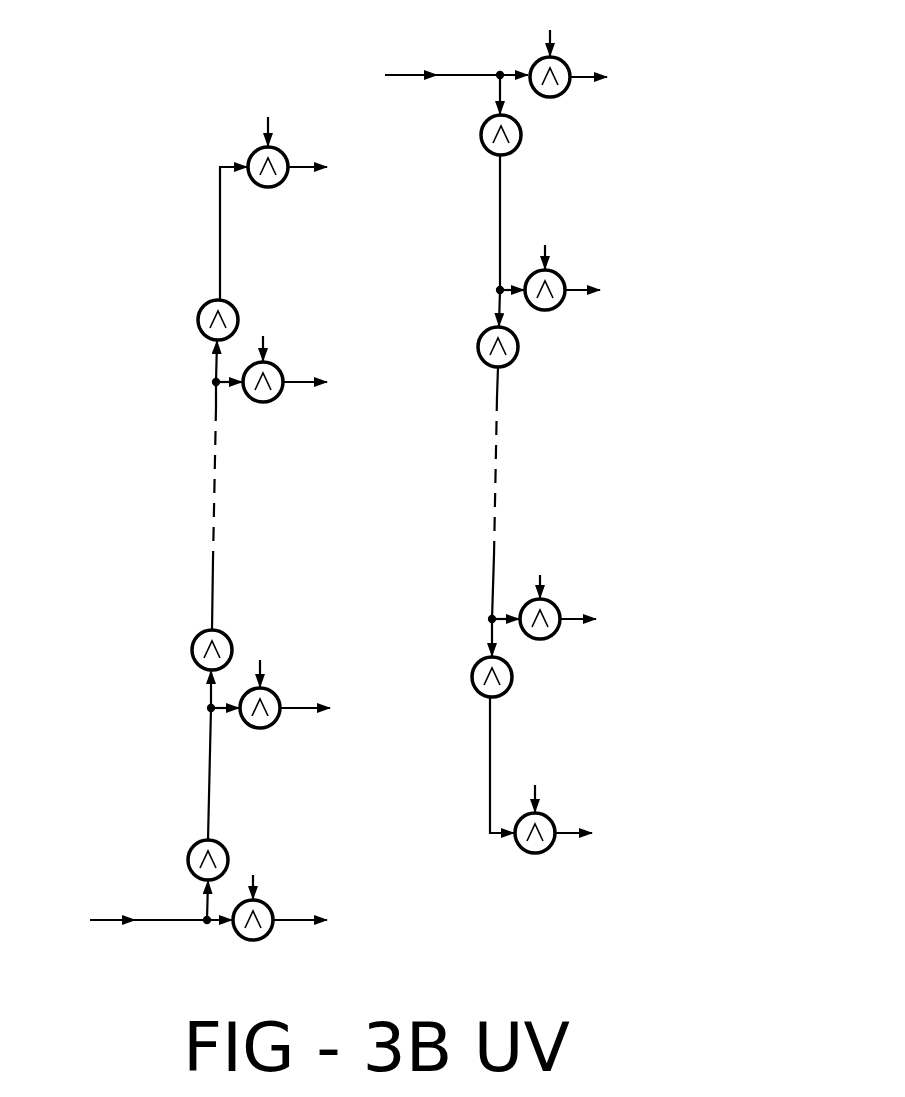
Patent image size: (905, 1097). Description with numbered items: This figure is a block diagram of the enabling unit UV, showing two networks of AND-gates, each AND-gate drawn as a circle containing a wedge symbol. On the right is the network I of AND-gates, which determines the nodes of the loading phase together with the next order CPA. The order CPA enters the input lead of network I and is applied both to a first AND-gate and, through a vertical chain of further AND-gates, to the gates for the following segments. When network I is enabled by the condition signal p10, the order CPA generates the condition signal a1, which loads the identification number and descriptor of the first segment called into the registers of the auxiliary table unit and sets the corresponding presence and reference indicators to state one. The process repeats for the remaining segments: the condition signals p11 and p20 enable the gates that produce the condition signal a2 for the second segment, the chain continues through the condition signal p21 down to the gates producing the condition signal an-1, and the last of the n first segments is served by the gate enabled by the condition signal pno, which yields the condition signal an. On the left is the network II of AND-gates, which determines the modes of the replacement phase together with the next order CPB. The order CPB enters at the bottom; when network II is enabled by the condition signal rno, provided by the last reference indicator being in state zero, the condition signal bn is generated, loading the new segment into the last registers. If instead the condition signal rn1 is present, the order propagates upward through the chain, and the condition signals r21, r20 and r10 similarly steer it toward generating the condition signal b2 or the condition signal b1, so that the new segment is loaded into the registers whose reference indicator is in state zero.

The order CPA is at (434, 59).
The order CPB is at (132, 928).
The condition signal p10 is at (552, 28).
The condition signal p11 is at (481, 134).
The condition signal p20 is at (537, 241).
The condition signal p21 is at (477, 347).
The condition signal pn0 pno is at (535, 782).
The condition signal a1 is at (587, 77).
The condition signal a2 is at (571, 290).
The condition signal a(n-1) an-1 is at (578, 619).
The condition signal an is at (559, 775).
The condition signal r10 is at (266, 114).
The condition signal r20 is at (275, 333).
The condition signal r21 is at (197, 320).
The condition signal rn1 is at (187, 860).
The condition signal rn0 rno is at (261, 871).
The condition signal b1 is at (295, 223).
The condition signal b2 is at (293, 382).
The condition signal bn is at (299, 920).
The network I of AND-gates I is at (537, 932).
The network II of AND-gates II is at (227, 1001).